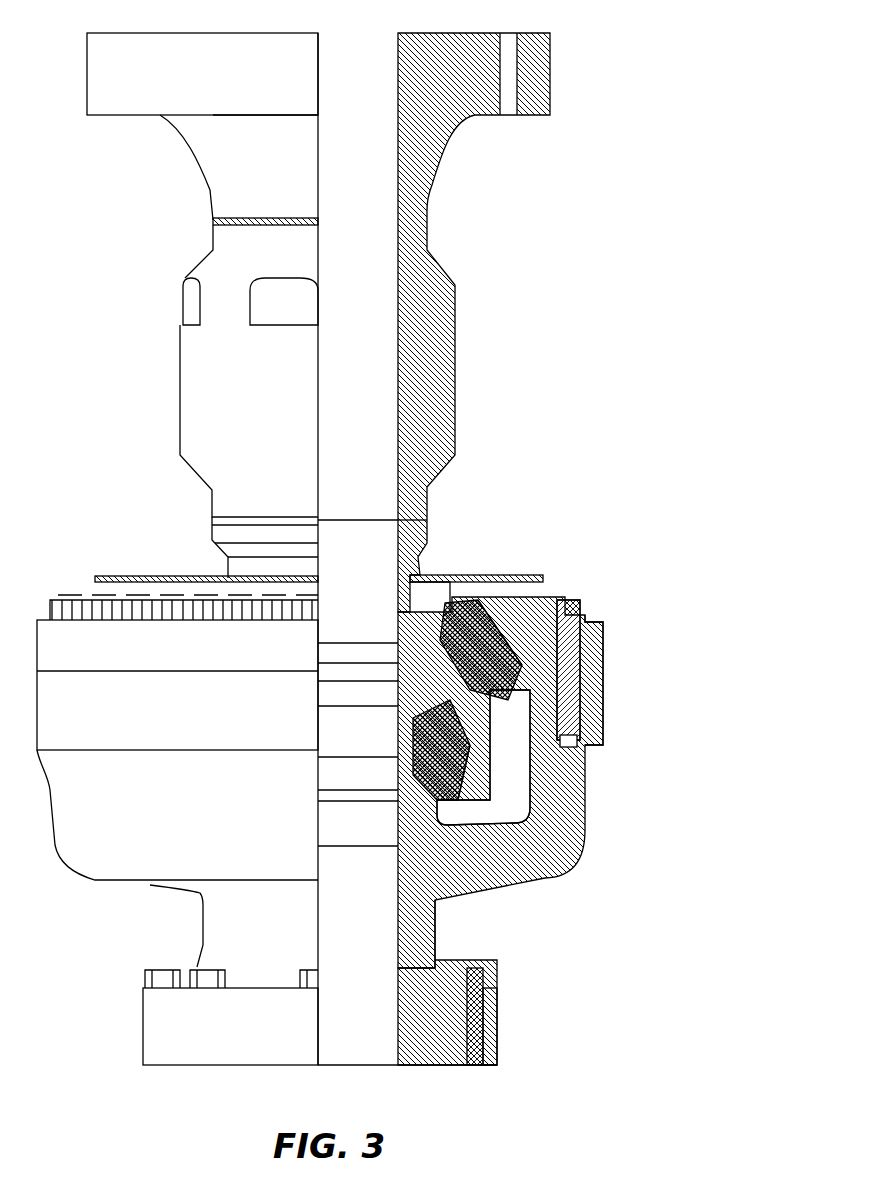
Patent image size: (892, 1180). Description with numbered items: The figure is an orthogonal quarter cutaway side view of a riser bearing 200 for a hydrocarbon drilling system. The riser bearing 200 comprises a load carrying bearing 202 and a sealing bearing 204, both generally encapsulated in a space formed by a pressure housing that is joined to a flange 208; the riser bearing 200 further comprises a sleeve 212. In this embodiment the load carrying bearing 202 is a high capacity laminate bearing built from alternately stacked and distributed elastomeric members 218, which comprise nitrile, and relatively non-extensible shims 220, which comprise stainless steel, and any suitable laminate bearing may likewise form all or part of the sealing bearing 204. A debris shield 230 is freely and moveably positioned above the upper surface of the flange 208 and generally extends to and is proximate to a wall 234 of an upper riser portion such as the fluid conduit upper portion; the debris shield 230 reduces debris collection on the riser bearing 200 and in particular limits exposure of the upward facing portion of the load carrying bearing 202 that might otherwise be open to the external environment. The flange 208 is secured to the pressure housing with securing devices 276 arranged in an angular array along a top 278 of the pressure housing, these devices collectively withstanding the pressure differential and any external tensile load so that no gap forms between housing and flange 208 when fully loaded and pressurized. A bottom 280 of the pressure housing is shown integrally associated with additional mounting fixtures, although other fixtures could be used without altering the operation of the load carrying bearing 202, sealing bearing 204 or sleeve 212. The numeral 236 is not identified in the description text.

The riser bearing 200 is at (658, 156).
The load carrying bearing 202 is at (437, 592).
The sealing bearing 204 is at (465, 822).
The flange 208 is at (593, 622).
The sleeve 212 is at (405, 762).
The elastomeric members 218 is at (505, 688).
The non-extensible shims 220 is at (505, 695).
The debris shield 230 is at (523, 578).
The wall 234 is at (398, 330).
The bore 236 is at (380, 281).
The securing devices 276 is at (568, 603).
The top 278 is at (598, 668).
The bottom 280 is at (470, 878).